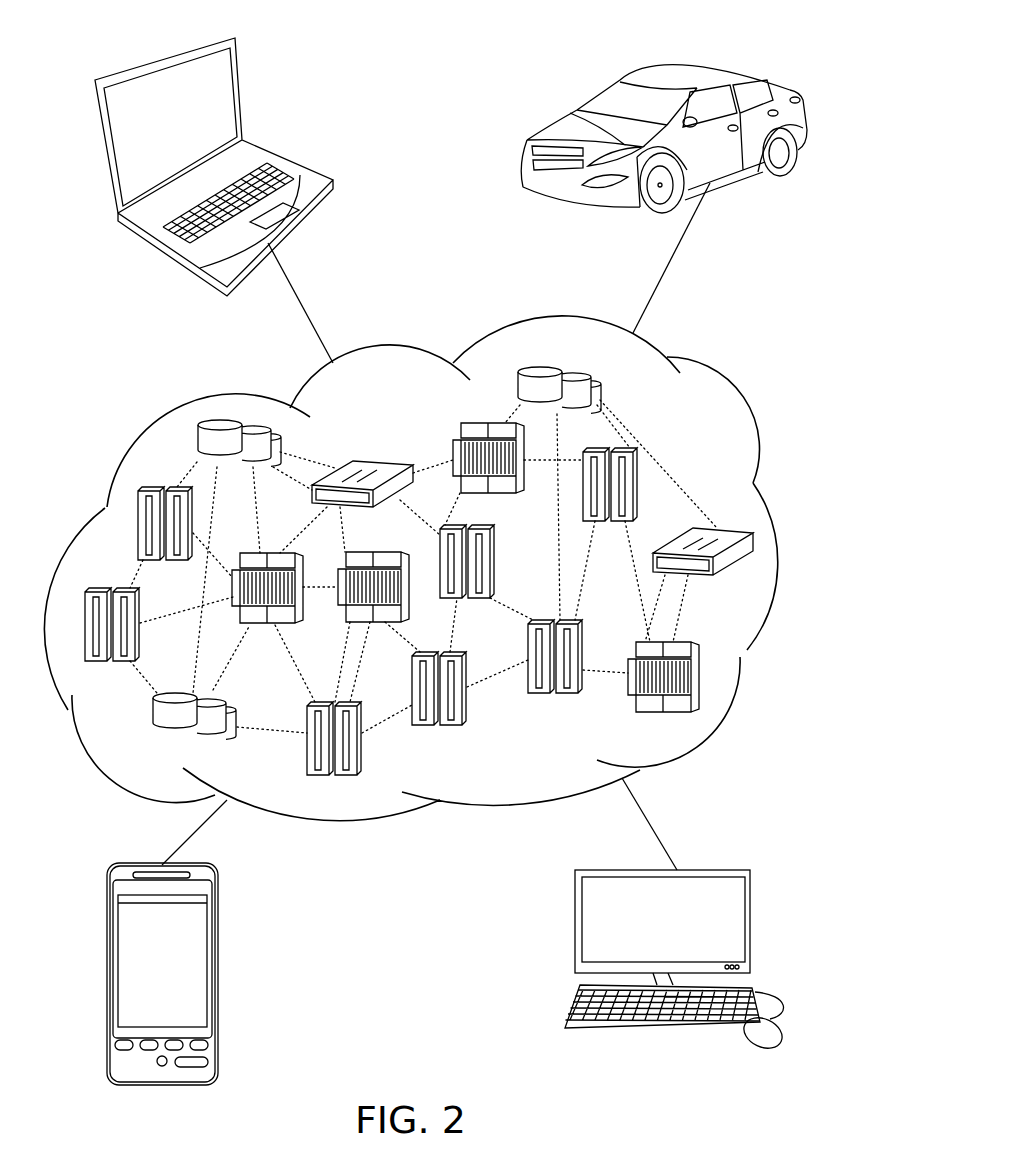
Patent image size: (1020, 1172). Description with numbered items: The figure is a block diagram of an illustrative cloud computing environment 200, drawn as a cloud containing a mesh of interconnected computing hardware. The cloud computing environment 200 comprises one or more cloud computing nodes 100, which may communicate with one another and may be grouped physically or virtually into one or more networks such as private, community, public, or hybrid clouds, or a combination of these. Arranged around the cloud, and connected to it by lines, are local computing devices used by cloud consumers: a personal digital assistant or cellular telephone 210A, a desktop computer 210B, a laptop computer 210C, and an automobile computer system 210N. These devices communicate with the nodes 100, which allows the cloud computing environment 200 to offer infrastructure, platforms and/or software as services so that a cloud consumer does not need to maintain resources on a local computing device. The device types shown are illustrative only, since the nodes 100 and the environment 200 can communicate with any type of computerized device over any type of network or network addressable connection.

The cloud computing node 100 is at (724, 512).
The cloud computing environment 200 is at (730, 382).
The personal digital assistant or cellular telephone 210A is at (217, 890).
The desktop computer 210B is at (752, 887).
The laptop computer 210C is at (293, 162).
The automobile computer system 210N is at (763, 80).